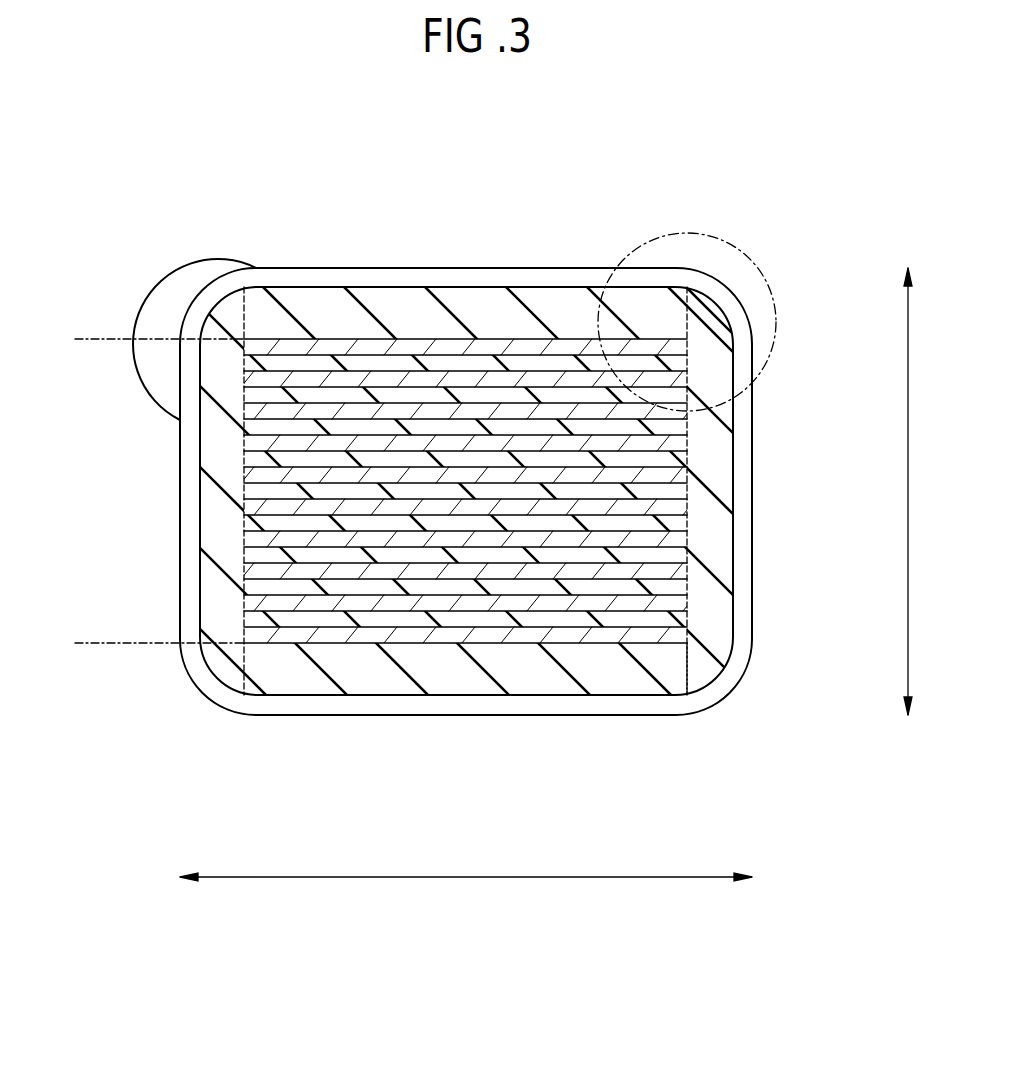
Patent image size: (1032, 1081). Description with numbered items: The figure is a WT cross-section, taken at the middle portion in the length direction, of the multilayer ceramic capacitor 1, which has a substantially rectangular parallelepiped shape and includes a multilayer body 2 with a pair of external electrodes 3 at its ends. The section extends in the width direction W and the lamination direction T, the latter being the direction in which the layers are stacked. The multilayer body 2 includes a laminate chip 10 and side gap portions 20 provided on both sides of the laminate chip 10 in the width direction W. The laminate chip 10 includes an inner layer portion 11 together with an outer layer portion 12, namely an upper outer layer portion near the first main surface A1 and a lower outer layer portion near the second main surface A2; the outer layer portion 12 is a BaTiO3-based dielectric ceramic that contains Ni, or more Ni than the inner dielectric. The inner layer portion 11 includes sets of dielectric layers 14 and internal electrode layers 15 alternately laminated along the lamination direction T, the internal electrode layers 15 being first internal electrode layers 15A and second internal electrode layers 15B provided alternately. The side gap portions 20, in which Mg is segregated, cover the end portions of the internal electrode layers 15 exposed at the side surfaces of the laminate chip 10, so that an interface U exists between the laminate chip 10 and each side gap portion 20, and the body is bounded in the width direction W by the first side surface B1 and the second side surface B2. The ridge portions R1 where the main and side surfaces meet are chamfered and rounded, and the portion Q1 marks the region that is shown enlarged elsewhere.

The multilayer ceramic capacitor 1 is at (775, 222).
The multilayer body 2 is at (593, 288).
The external electrode 3 is at (590, 715).
The laminate chip 10 is at (635, 288).
The inner layer portion 11 is at (70, 339).
The outer layer portion 12 is at (453, 287).
The dielectric layer 14 is at (250, 398).
The internal electrode layer 15 is at (118, 350).
The first internal electrode layer 15A is at (250, 347).
The second internal electrode layer 15B is at (250, 380).
The side gap portion 20 is at (712, 423).
The first main surface A1 is at (549, 287).
The second main surface A2 is at (545, 697).
The first side surface B1 is at (197, 582).
The second side surface B2 is at (733, 580).
The ridge portion R1 is at (311, 287).
The portion Q1 is at (777, 302).
The interface U is at (687, 683).
The lamination direction T is at (919, 491).
The width direction W is at (466, 891).